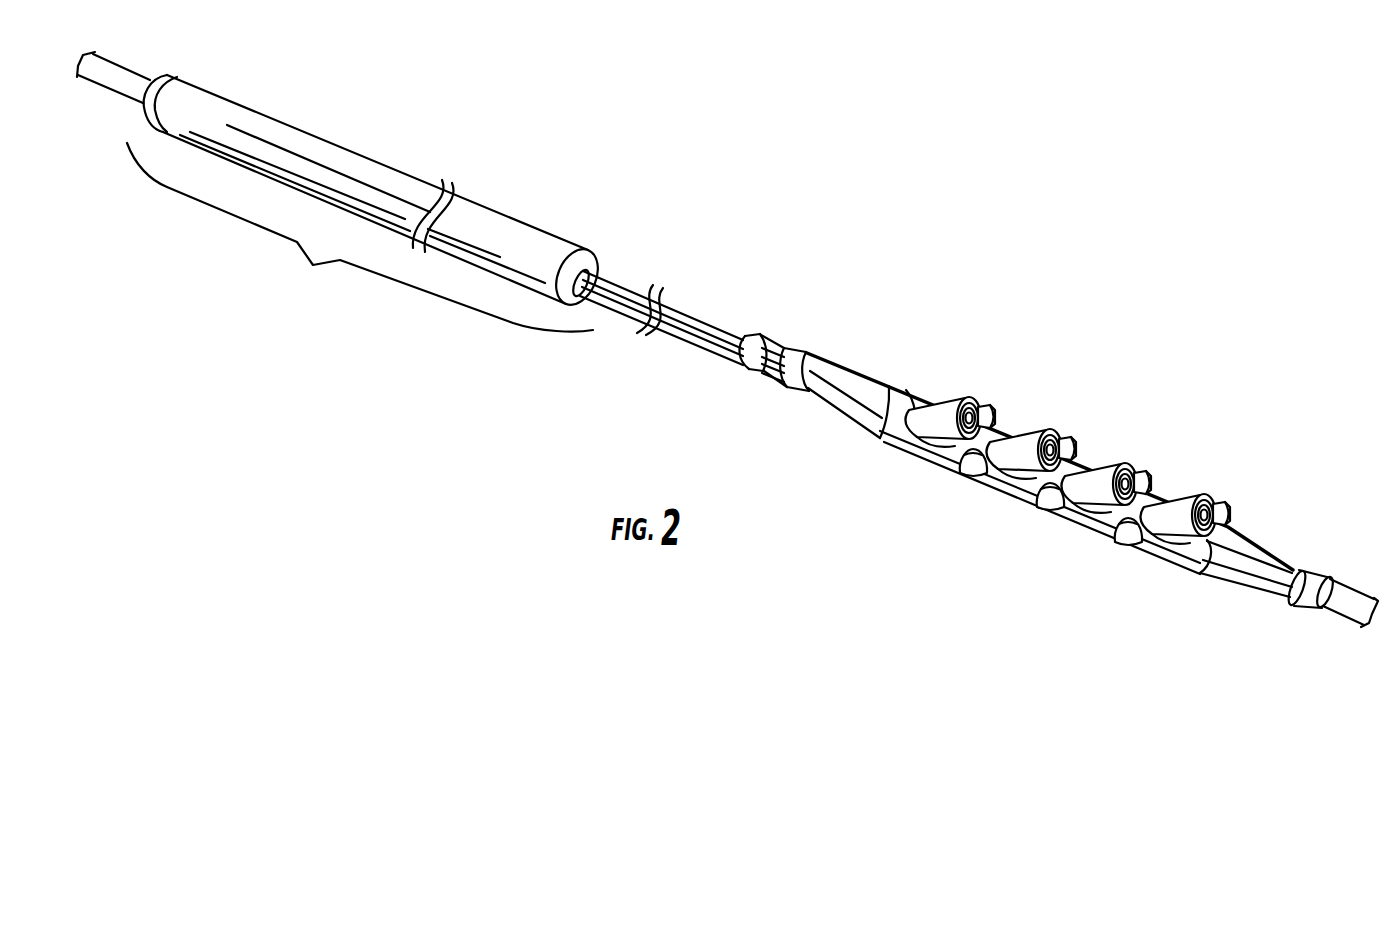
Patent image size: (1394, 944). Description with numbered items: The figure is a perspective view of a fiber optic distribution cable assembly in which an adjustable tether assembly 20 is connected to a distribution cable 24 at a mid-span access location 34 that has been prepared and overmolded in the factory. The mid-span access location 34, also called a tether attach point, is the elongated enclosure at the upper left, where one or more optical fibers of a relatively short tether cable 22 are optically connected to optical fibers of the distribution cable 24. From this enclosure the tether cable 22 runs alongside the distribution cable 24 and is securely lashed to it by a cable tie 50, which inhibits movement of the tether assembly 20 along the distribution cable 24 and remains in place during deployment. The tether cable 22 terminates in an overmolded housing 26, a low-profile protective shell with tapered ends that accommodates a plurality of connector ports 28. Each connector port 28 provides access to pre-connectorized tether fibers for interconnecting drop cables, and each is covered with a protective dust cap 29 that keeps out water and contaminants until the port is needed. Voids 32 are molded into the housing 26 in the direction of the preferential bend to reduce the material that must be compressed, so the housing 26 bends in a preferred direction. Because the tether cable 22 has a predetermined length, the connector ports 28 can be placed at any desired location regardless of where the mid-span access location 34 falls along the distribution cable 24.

The adjustable tether assembly 20 is at (1338, 527).
The tether cable 22 is at (777, 337).
The distribution cable 24 is at (772, 363).
The housing 26 is at (840, 373).
The connector port 28 is at (945, 398).
The protective dust cap 29 is at (1073, 445).
The void 32 is at (970, 473).
The mid-span access location 34 is at (366, 203).
The cable tie 50 is at (763, 330).